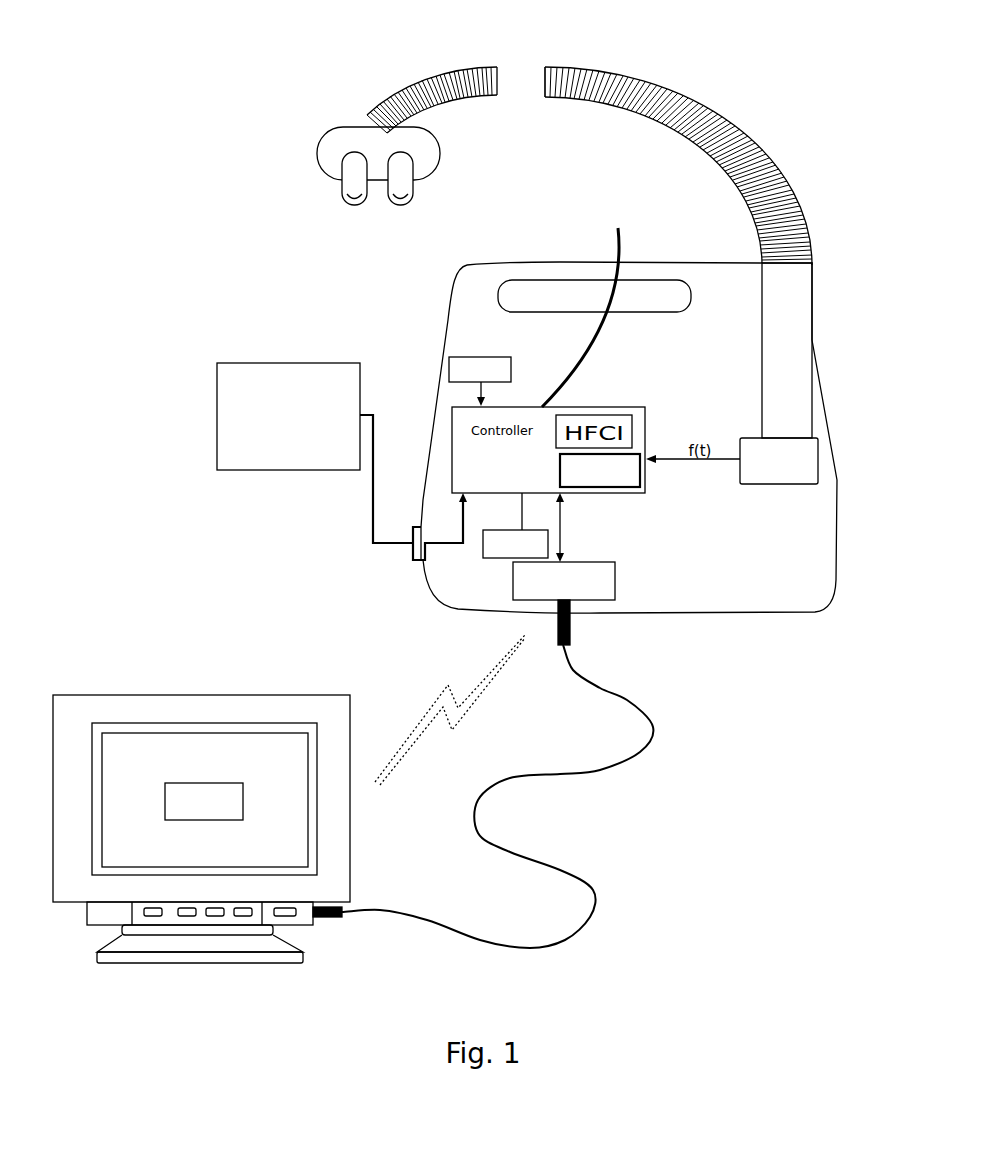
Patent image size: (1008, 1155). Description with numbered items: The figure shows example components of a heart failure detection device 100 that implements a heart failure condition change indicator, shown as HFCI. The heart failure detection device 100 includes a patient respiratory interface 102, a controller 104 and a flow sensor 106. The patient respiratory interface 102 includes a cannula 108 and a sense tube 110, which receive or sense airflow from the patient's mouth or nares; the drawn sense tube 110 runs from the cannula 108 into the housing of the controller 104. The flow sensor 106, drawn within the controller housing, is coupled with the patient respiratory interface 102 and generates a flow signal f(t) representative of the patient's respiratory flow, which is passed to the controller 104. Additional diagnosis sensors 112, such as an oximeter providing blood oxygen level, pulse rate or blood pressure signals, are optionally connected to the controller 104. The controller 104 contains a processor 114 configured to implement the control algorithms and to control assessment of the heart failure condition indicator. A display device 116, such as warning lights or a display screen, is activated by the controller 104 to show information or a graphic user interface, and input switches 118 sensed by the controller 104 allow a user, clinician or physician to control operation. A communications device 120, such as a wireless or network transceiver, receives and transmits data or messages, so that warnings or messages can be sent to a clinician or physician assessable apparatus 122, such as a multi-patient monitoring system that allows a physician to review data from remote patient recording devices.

The heart failure detection device 100 is at (733, 125).
The patient respiratory interface 102 is at (390, 54).
The controller 104 is at (580, 312).
The flow sensor 106 is at (767, 484).
The cannula 108 is at (332, 162).
The sense tube 110 is at (665, 120).
The diagnosis sensors 112 is at (308, 472).
The processor 114 is at (627, 493).
The display device 116 is at (483, 553).
The input switches 118 is at (497, 357).
The communications device 120 is at (615, 584).
The clinician or physician assessable apparatus 122 is at (262, 694).